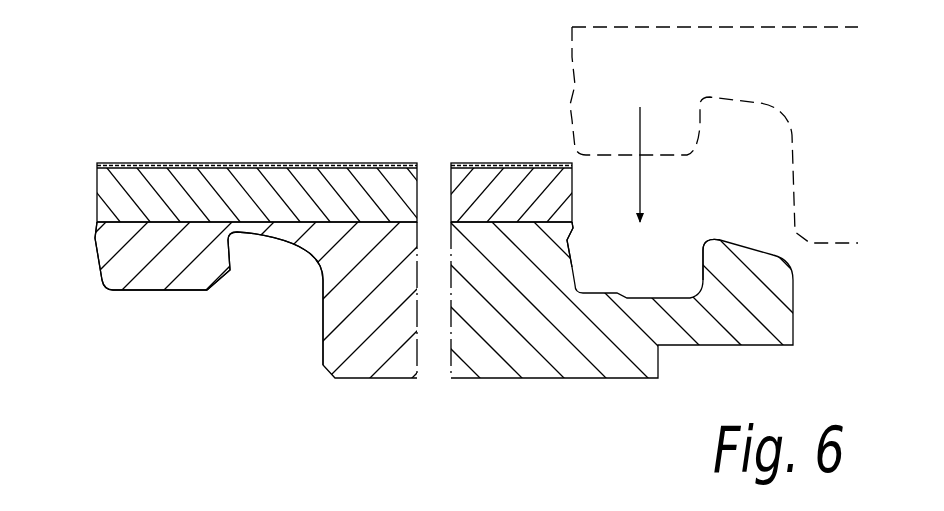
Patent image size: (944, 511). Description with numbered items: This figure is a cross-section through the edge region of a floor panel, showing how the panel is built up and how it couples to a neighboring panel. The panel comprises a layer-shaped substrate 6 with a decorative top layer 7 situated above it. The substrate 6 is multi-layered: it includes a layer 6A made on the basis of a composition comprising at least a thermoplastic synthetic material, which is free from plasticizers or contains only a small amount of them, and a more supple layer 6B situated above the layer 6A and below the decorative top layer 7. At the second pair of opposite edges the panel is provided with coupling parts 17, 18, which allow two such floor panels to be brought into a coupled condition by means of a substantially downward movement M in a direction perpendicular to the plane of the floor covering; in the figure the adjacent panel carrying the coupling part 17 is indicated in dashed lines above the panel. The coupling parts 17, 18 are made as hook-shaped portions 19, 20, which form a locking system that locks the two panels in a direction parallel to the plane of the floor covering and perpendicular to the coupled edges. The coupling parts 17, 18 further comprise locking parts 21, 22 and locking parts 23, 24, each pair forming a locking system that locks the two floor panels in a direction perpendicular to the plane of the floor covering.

The layer-shaped substrate 6 is at (442, 347).
The layer 6A is at (373, 337).
The more supple layer 6B is at (387, 197).
The decorative top layer 7 is at (178, 163).
The coupling part 17 is at (520, 150).
The coupling part 18 is at (173, 353).
The hook-shaped portion 19 is at (675, 230).
The hook-shaped portion 20 is at (253, 317).
The locking part 21 is at (568, 232).
The locking part 22 is at (95, 238).
The locking part 23 is at (703, 253).
The locking part 24 is at (228, 260).
The downward movement M is at (657, 164).